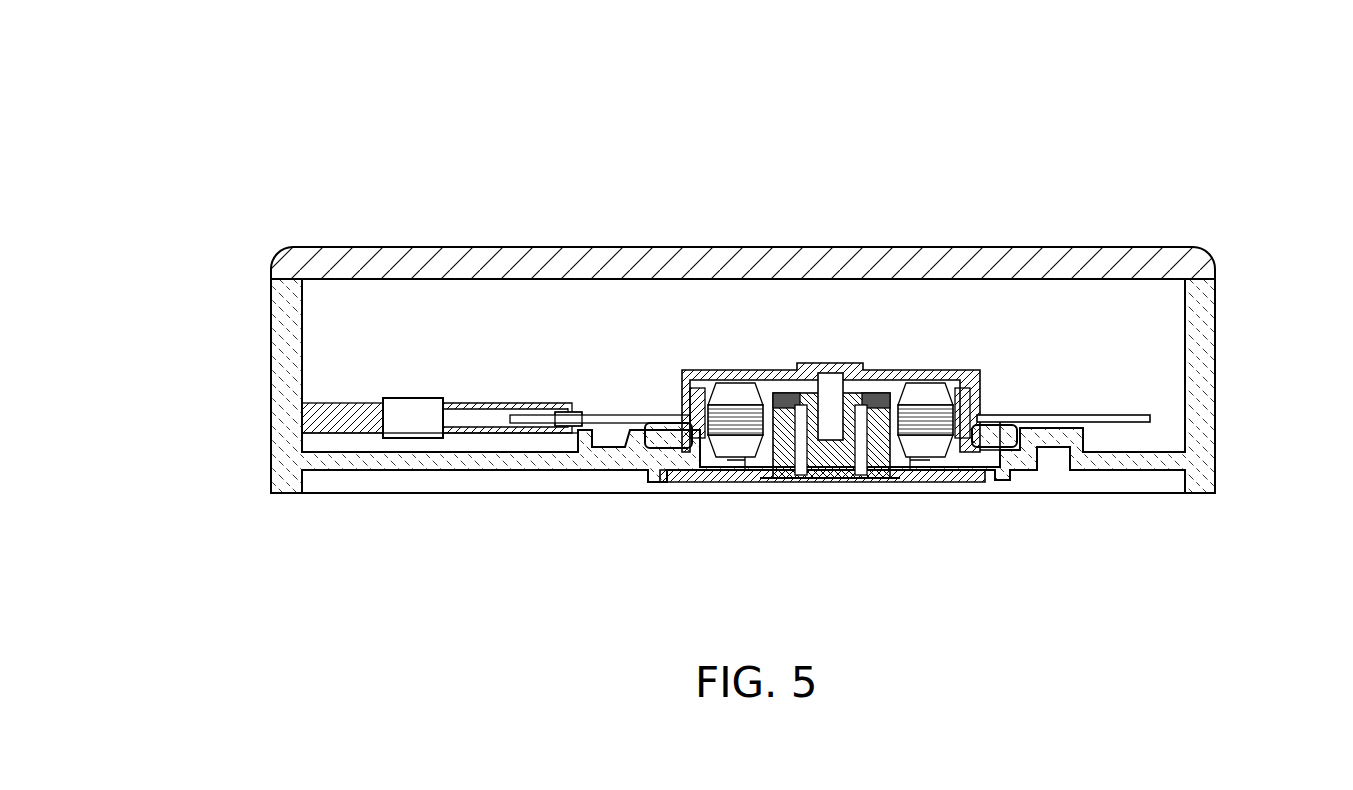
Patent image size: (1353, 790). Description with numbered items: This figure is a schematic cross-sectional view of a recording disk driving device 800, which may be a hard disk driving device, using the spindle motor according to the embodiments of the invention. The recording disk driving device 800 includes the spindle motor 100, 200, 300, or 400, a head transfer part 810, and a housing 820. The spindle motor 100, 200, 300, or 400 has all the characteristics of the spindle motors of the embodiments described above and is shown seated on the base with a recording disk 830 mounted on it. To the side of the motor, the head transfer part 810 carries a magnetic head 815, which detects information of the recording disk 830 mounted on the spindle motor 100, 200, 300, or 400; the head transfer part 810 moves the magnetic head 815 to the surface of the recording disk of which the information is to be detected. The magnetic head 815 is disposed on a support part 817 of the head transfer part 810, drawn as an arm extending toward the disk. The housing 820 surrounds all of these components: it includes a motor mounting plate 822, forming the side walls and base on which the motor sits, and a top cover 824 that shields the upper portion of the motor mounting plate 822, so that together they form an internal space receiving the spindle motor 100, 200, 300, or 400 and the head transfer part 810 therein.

The recording disk driving device 800 is at (421, 77).
The housing 820 is at (256, 341).
The top cover 824 is at (594, 260).
The motor mounting plate 822 is at (1208, 435).
The head transfer part 810 is at (410, 442).
The support part 817 is at (500, 433).
The magnetic head 815 is at (590, 422).
The spindle motor 100 is at (840, 346).
The spindle motor 200 is at (830, 426).
The spindle motor 300 is at (830, 425).
The spindle motor 400 is at (830, 422).
The recording disk 830 is at (1093, 416).